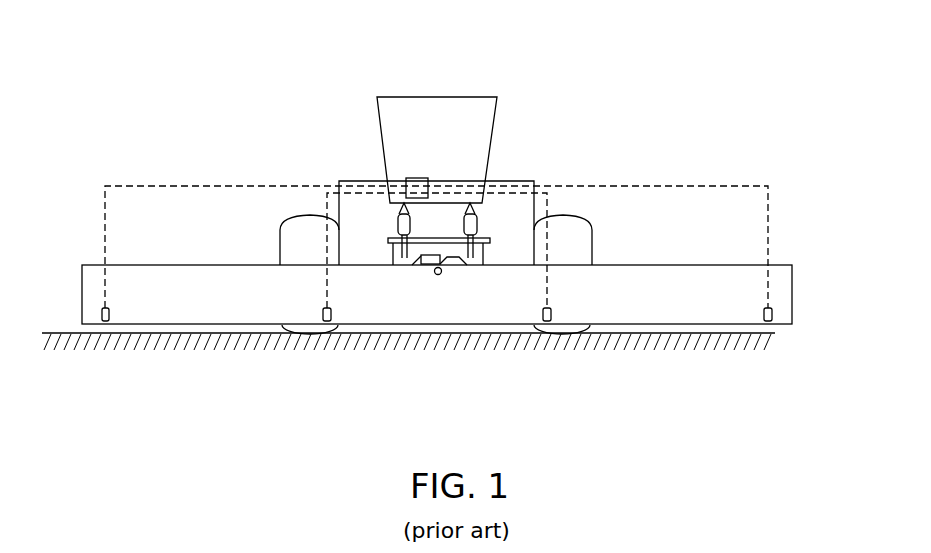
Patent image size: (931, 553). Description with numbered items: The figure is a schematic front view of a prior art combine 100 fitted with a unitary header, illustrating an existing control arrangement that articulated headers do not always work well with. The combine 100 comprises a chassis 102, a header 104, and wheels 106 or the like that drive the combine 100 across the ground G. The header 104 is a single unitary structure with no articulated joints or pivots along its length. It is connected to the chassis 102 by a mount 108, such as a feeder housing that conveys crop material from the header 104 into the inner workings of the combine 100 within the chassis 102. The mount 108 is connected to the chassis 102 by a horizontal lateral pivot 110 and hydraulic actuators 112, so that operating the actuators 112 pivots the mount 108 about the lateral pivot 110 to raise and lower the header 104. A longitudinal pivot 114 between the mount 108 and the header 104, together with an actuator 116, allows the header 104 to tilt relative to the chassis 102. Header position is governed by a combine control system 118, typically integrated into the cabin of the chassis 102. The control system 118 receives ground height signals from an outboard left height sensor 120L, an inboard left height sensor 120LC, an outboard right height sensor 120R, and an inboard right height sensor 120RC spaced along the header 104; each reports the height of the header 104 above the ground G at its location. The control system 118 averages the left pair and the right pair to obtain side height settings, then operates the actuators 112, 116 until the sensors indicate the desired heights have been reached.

The combine 100 is at (622, 80).
The chassis 102 is at (523, 198).
The header 104 is at (643, 326).
The wheels 106 is at (587, 242).
The mount 108 is at (478, 260).
The horizontal lateral pivot 110 is at (442, 238).
The hydraulic actuators 112 is at (402, 230).
The longitudinal pivot 114 is at (443, 272).
The actuator 116 is at (430, 264).
The combine control system 118 is at (418, 178).
The outboard right height sensor 120R is at (104, 321).
The inboard right height sensor 120RC is at (323, 313).
The inboard left height sensor 120LC is at (546, 323).
The outboard left height sensor 120L is at (771, 322).
The ground G is at (62, 333).